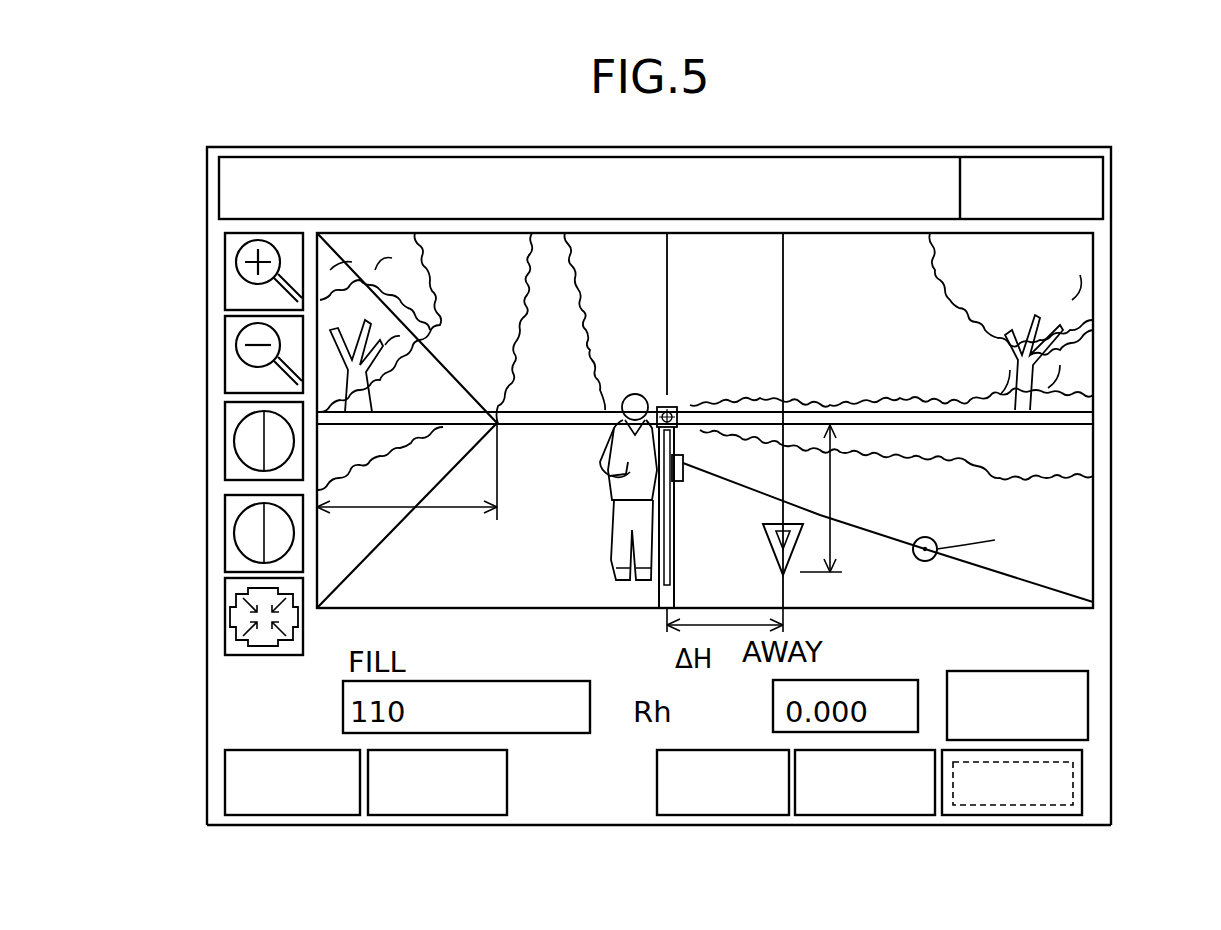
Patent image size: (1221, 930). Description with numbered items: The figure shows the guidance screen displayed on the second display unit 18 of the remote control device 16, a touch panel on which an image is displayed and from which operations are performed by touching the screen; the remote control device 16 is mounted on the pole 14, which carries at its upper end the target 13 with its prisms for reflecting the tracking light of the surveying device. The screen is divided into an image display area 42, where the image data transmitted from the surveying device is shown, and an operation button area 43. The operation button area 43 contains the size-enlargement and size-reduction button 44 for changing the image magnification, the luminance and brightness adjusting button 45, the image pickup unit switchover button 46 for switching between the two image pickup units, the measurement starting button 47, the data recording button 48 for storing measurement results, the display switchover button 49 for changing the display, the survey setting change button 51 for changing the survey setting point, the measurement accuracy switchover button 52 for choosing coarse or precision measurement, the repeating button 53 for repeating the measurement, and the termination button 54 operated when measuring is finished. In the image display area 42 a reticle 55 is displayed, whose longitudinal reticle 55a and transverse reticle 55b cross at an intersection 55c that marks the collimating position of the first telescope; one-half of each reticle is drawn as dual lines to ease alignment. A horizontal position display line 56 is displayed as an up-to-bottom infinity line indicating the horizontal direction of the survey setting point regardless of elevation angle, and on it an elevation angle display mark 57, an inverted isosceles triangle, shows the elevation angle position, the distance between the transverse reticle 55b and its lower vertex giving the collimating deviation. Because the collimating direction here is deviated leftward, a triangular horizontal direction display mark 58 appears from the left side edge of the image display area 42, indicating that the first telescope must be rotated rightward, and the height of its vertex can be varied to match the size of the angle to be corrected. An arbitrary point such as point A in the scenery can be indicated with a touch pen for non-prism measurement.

The second display unit 18 is at (935, 145).
The termination button 54 is at (1103, 196).
The image display area 42 is at (1093, 325).
The reticle 55 is at (1065, 415).
The size-enlargement and size-reduction button 44 is at (222, 322).
The luminance and brightness adjusting button 45 is at (222, 488).
The image pickup unit switchover button 46 is at (222, 630).
The target 13 is at (660, 405).
The remote control device 16 is at (663, 462).
The pole 14 is at (680, 531).
The longitudinal reticle 55a is at (673, 598).
The transverse reticle 55b is at (973, 424).
The intersection 55c is at (683, 413).
The horizontal position display line 56 is at (785, 461).
The elevation angle display mark 57 is at (790, 553).
The horizontal direction display mark 58 is at (387, 540).
The survey setting change button 51 is at (1088, 722).
The measurement accuracy switchover button 52 is at (297, 816).
The repeating button 53 is at (510, 795).
The operation button area 43 is at (482, 826).
The display switchover button 49 is at (760, 816).
The data recording button 48 is at (885, 816).
The measurement starting button 47 is at (1018, 816).